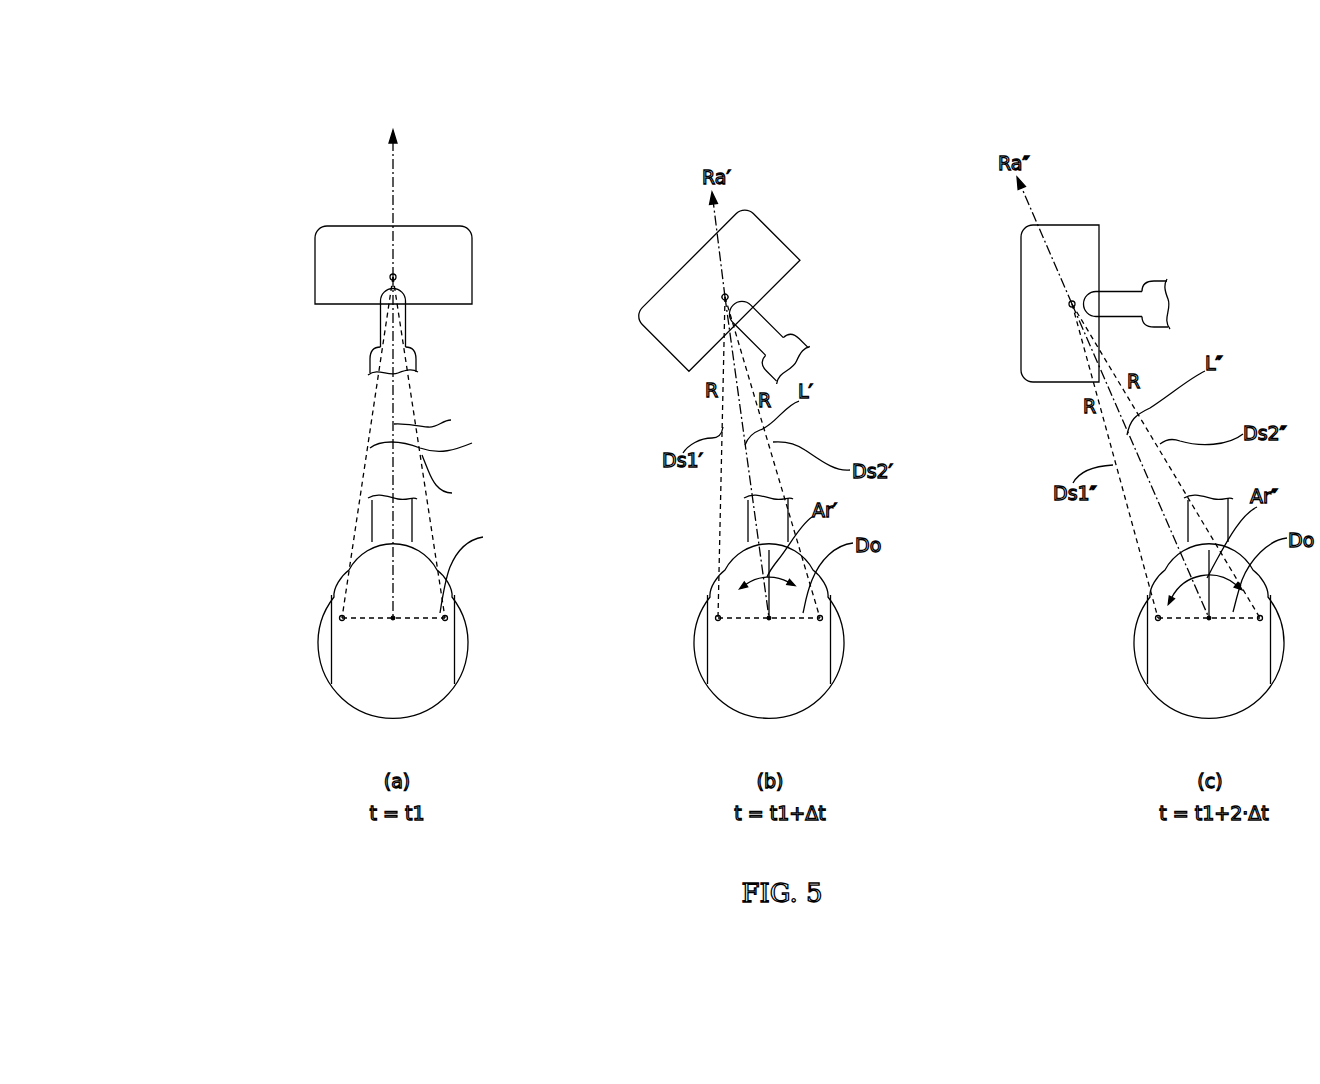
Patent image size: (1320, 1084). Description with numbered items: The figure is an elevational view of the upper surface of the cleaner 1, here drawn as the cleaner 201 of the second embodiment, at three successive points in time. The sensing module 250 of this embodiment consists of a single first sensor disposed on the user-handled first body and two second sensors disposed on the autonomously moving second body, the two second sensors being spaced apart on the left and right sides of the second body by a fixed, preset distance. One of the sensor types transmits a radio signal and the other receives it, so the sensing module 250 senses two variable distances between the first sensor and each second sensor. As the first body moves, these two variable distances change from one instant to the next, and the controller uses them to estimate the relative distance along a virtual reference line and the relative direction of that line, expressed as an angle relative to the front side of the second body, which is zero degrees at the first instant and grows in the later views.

The cleaner 201 is at (299, 406).
The cleaner 1 is at (299, 411).
The sensing module 250 is at (163, 572).